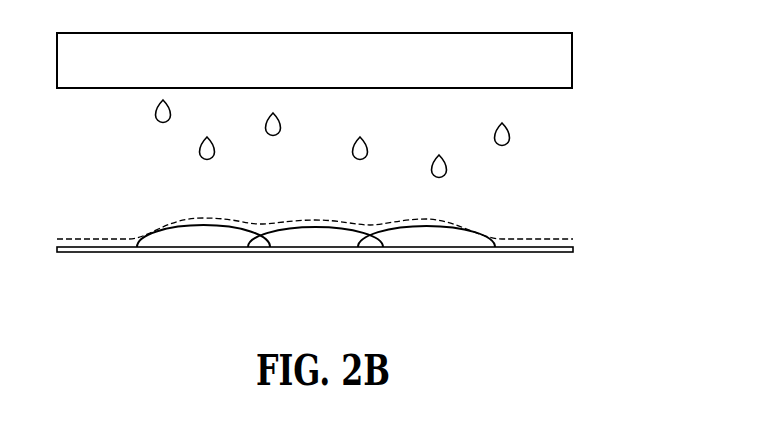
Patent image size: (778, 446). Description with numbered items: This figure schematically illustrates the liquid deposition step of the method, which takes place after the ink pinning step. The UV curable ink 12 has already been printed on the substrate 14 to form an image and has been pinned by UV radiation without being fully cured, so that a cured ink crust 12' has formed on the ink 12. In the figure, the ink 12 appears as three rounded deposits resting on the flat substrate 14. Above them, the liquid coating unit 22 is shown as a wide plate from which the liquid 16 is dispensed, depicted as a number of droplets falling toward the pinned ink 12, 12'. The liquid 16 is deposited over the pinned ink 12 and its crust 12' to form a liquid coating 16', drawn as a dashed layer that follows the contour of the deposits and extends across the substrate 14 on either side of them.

The UV curable ink 12 is at (260, 277).
The cured ink crust 12' is at (454, 210).
The substrate 14 is at (543, 252).
The liquid 16 is at (286, 136).
The liquid coating 16' is at (298, 208).
The liquid coating unit 22 is at (553, 62).